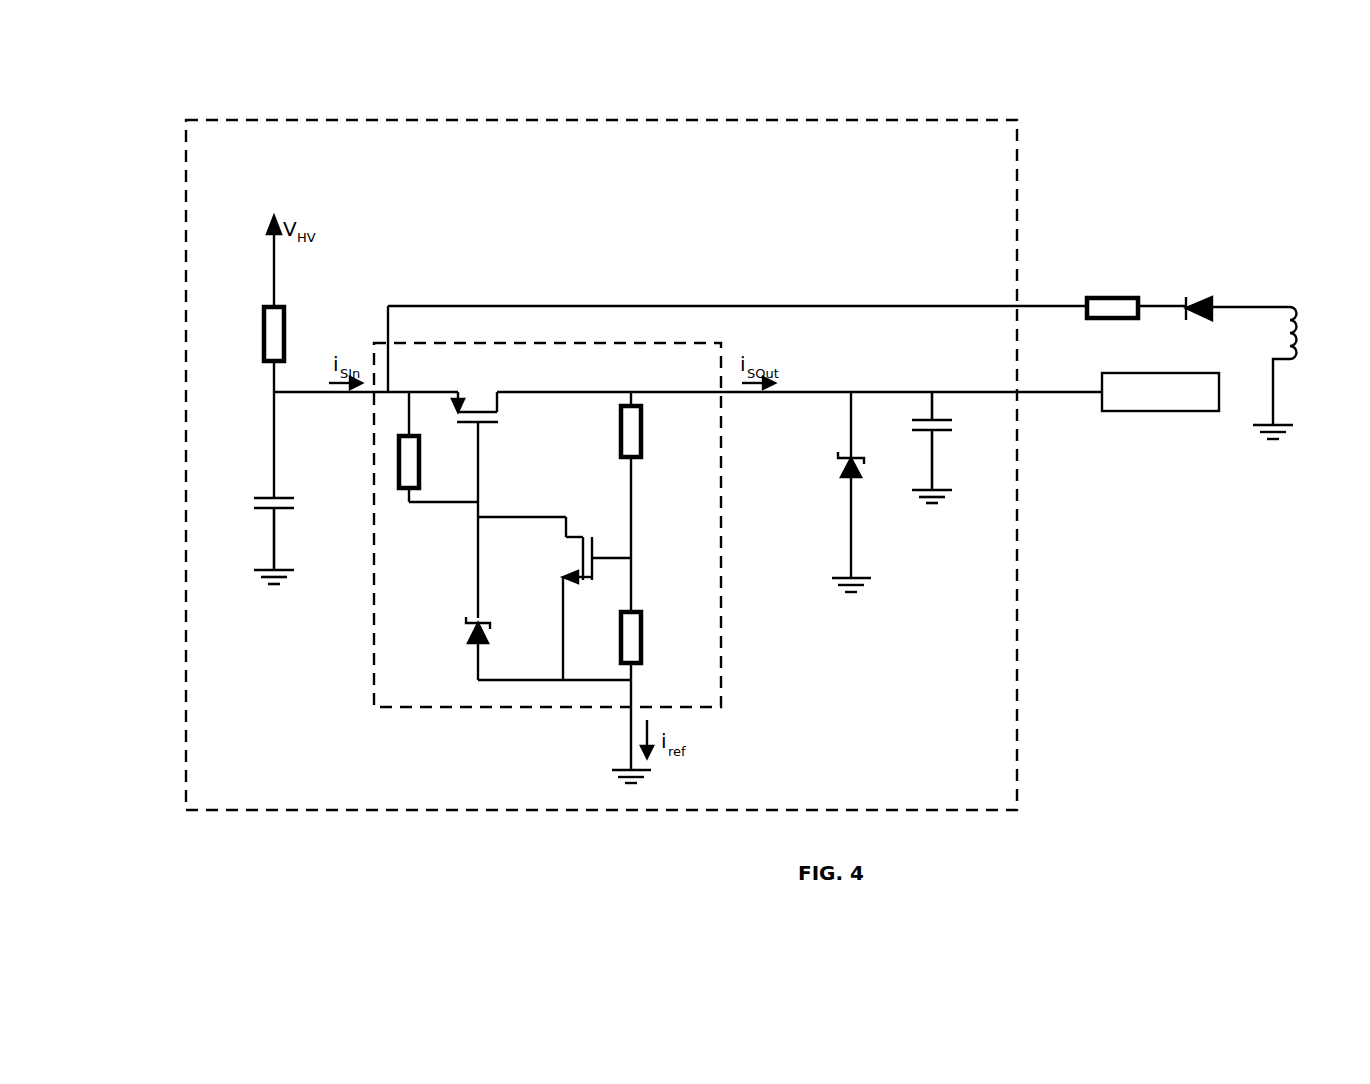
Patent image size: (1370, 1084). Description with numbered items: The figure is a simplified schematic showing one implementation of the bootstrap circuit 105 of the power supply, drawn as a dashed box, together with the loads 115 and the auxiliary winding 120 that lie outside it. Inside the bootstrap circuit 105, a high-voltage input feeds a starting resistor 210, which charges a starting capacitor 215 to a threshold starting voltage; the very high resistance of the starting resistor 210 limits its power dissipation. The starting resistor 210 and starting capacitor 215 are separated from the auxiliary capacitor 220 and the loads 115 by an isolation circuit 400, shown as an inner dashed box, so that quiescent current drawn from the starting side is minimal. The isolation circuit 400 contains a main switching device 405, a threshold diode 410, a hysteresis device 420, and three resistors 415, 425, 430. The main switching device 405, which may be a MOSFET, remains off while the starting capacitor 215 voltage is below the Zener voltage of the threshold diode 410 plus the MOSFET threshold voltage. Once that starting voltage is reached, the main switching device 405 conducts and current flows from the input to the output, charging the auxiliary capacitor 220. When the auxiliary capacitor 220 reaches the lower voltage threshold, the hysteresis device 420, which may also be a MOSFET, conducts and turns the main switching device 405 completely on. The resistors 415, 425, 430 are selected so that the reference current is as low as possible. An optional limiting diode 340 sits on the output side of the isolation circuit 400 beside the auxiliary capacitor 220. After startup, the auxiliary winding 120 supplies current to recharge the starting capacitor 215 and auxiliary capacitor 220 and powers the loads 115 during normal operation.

The bootstrap circuit 105 is at (186, 232).
The loads 115 is at (1170, 411).
The auxiliary winding 120 is at (1290, 360).
The starting resistor 210 is at (284, 336).
The starting capacitor 215 is at (260, 503).
The auxiliary capacitor 220 is at (946, 430).
The limiting diode 340 is at (845, 472).
The isolation circuit 400 is at (525, 342).
The main switching device 405 is at (494, 424).
The threshold diode 410 is at (470, 640).
The resistor 415 is at (403, 490).
The hysteresis device 420 is at (575, 520).
The resistor 425 is at (641, 455).
The resistor 430 is at (641, 655).